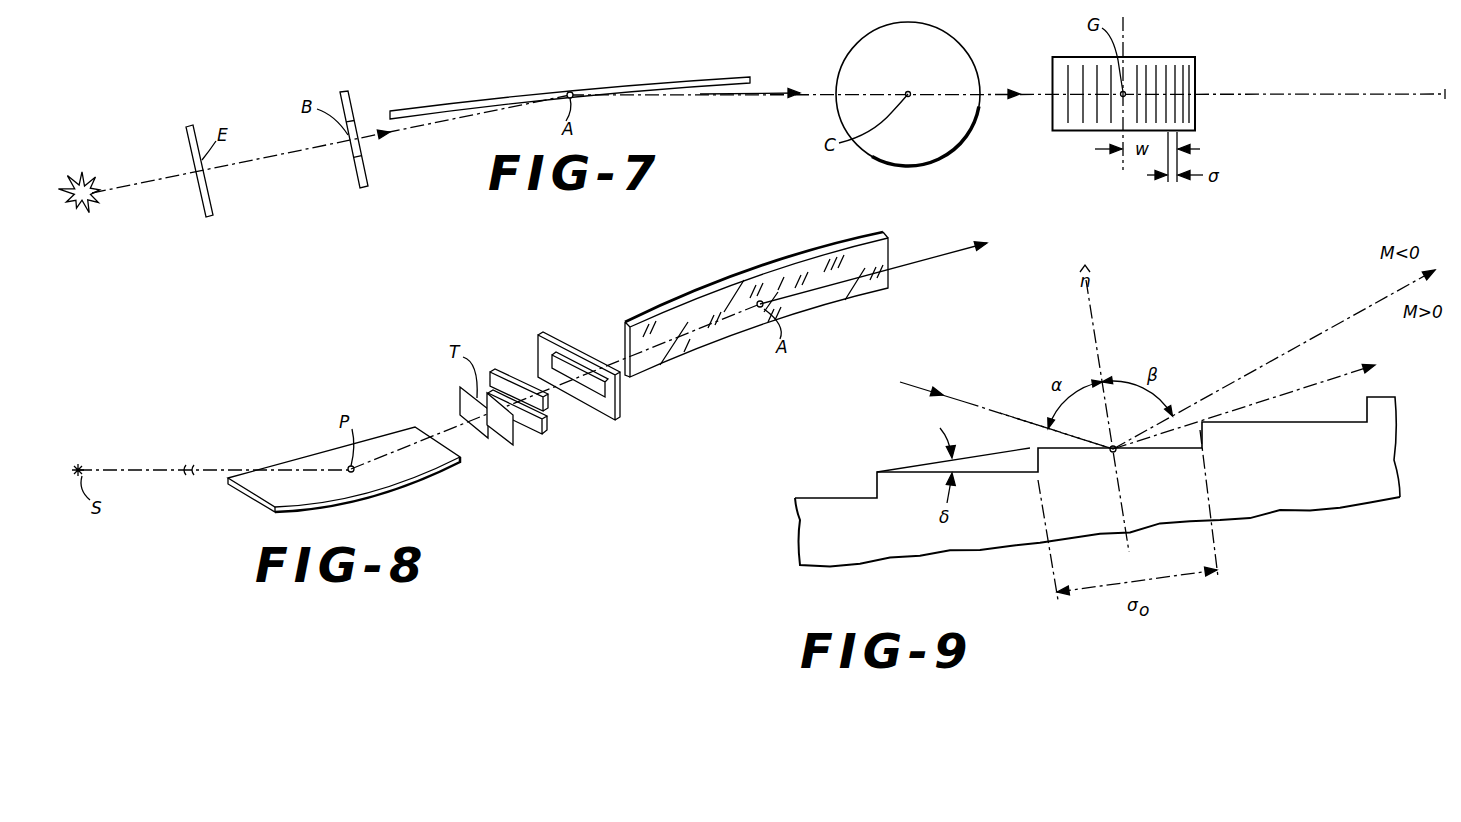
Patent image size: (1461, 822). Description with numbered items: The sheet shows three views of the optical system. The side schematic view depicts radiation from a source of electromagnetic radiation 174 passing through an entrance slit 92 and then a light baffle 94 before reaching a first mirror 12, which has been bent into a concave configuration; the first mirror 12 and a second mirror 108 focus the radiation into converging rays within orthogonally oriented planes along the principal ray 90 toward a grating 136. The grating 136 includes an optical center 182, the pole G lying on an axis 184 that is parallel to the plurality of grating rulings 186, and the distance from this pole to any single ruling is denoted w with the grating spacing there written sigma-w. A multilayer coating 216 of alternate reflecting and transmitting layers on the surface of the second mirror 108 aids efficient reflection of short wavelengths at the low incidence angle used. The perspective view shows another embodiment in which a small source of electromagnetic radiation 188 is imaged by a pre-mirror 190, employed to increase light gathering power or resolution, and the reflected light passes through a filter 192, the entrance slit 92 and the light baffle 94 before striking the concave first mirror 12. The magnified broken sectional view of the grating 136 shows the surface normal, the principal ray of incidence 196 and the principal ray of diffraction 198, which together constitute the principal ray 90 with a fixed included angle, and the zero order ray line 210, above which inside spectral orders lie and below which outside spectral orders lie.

In FIG. 7, the first mirror 12 is at (624, 80).
In FIG. 8, the first mirror 12 is at (713, 292).
In FIG. 7, the principal ray 90 is at (792, 93).
In FIG. 8, the principal ray 90 is at (938, 257).
In FIG. 9, the principal ray 90 is at (974, 403).
In FIG. 7, the entrance slit 92 is at (208, 217).
In FIG. 8, the entrance slit 92 is at (498, 368).
In FIG. 7, the light baffle 94 is at (363, 188).
In FIG. 8, the light baffle 94 is at (603, 405).
In FIG. 7, the second mirror 108 is at (957, 43).
In FIG. 7, the grating 136 is at (1196, 77).
In FIG. 9, the grating 136 is at (1370, 500).
In FIG. 7, the source of electromagnetic radiation 174 is at (94, 172).
In FIG. 7, the optical center 182 is at (1125, 92).
In FIG. 7, the axis 184 is at (1123, 168).
In FIG. 7, the grating rulings 186 is at (1080, 118).
In FIG. 8, the small source of electromagnetic radiation 188 is at (82, 466).
In FIG. 8, the pre-mirror 190 is at (393, 437).
In FIG. 8, the filter 192 is at (503, 437).
In FIG. 9, the principal ray of incidence 196 is at (1007, 420).
In FIG. 9, the principal ray of diffraction 198 is at (1290, 389).
In FIG. 9, the zero order ray line 210 is at (1248, 374).
In FIG. 7, the multilayer coating 216 is at (943, 127).